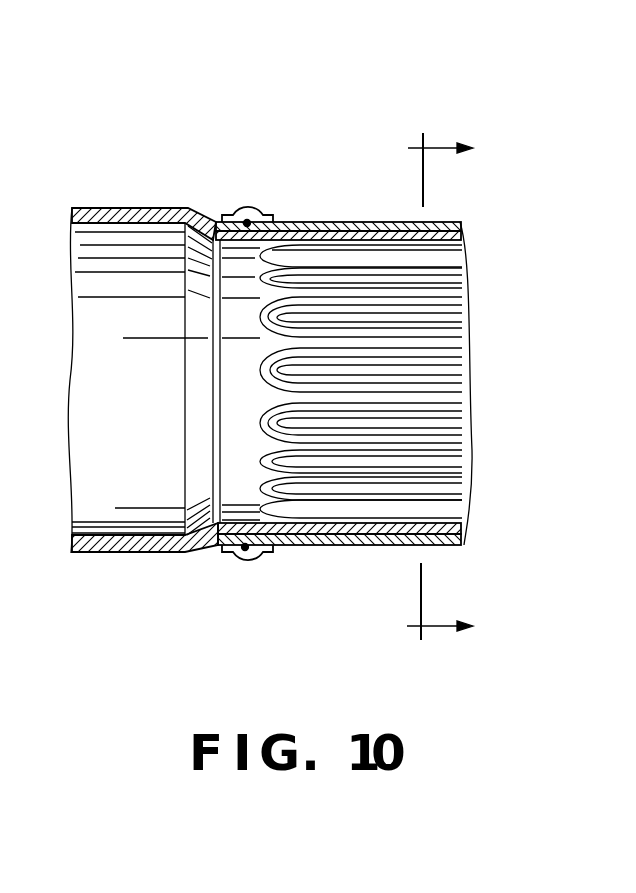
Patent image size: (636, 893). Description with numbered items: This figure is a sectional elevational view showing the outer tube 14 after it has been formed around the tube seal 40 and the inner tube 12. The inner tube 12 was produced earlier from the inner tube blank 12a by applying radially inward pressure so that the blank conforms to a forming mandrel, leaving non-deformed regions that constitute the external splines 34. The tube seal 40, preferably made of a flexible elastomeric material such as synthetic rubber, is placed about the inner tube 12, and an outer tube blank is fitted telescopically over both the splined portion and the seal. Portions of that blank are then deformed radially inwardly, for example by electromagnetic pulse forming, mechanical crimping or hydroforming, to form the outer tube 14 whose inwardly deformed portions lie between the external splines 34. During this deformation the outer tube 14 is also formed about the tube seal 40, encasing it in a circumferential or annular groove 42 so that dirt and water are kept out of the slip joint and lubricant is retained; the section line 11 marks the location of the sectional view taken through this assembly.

The inner tube 12 is at (115, 207).
The inner tube blank 12a is at (453, 315).
The outer tube 14 is at (420, 319).
The external splines 34 is at (412, 342).
The tube seal 40 is at (245, 221).
The annular groove 42 is at (253, 222).
The section line 11- 11 is at (423, 386).